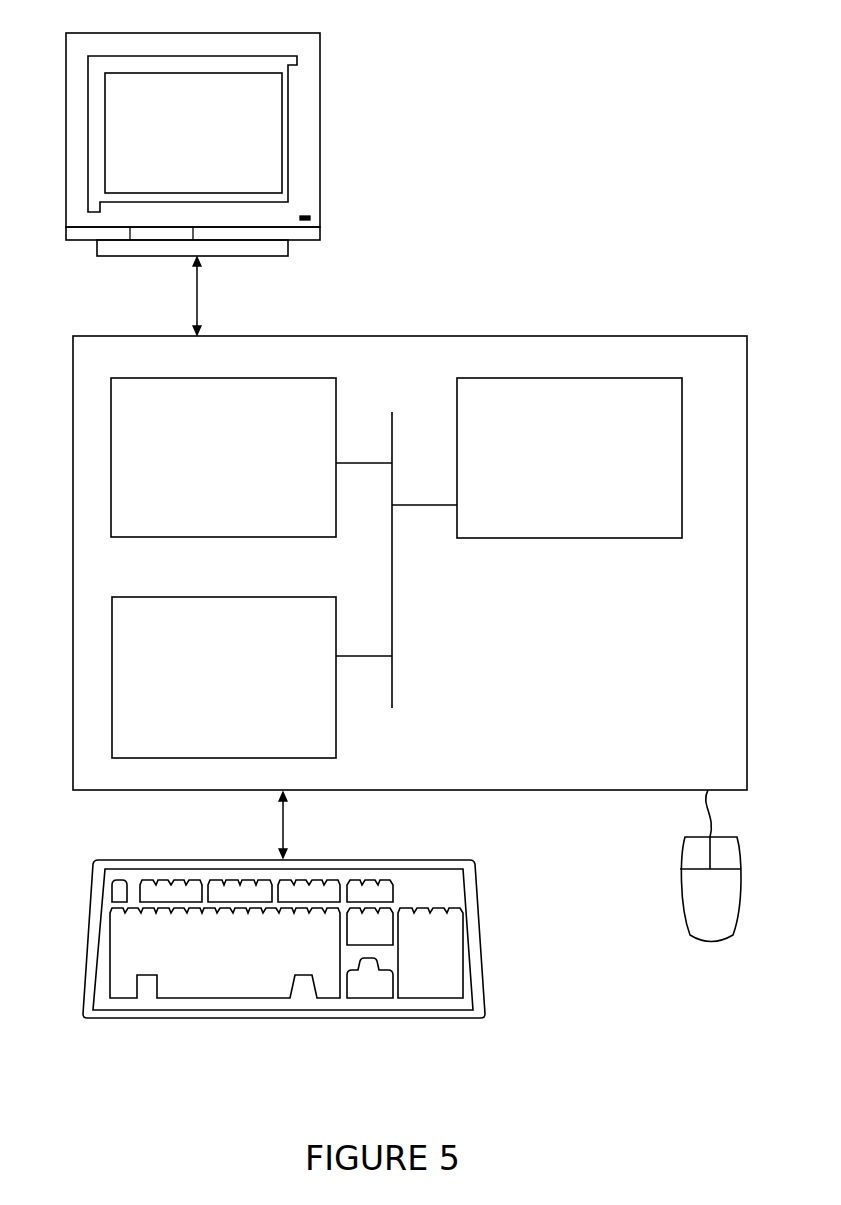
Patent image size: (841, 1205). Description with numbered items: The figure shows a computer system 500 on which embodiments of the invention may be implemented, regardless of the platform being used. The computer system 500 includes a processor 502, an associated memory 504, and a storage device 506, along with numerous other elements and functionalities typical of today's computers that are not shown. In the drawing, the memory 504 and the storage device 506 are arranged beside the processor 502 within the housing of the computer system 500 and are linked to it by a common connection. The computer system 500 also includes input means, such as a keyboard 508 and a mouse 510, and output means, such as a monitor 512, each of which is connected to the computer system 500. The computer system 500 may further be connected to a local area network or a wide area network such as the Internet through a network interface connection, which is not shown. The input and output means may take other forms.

The computer system 500 is at (448, 283).
The processor 502 is at (577, 471).
The memory 504 is at (246, 471).
The storage device 506 is at (240, 691).
The keyboard 508 is at (240, 966).
The mouse 510 is at (730, 912).
The monitor 512 is at (208, 149).